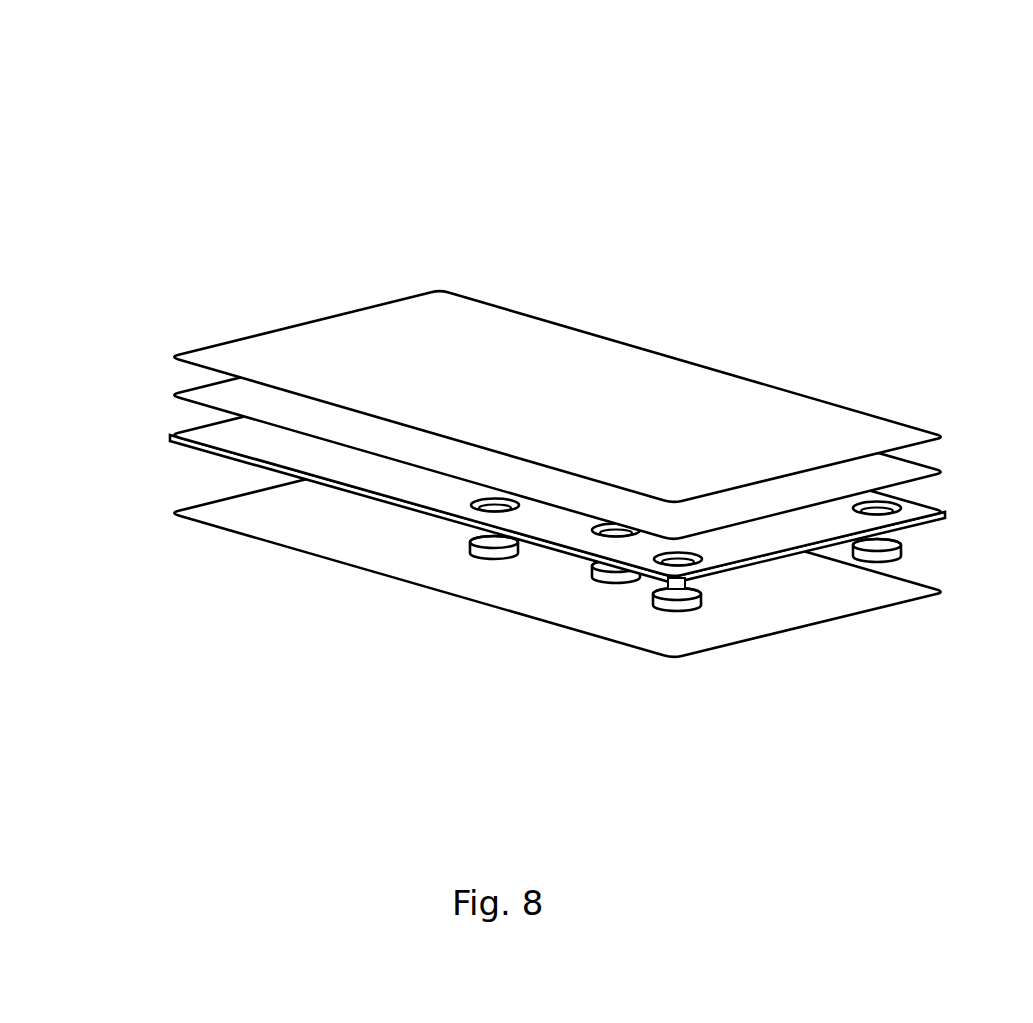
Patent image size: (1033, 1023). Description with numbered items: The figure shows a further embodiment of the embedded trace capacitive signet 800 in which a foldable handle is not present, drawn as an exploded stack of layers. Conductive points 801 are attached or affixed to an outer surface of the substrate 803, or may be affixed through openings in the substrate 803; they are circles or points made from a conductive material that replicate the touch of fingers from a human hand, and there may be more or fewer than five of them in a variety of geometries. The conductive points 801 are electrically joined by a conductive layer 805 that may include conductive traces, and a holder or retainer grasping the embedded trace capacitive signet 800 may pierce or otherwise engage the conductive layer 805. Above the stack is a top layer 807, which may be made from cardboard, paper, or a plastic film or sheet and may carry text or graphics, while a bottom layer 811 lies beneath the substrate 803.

The embedded trace capacitive signet 800 is at (487, 362).
The conductive points 801 is at (653, 601).
The substrate 803 is at (487, 479).
The conductive layer 805 is at (485, 434).
The top layer 807 is at (519, 376).
The bottom layer 811 is at (557, 580).